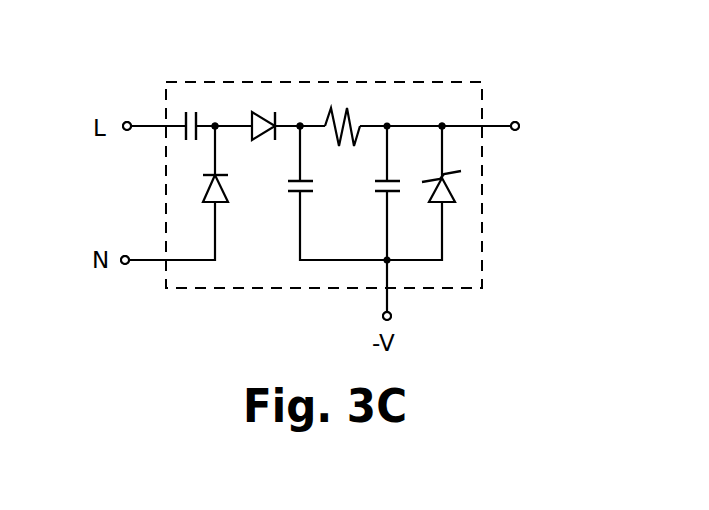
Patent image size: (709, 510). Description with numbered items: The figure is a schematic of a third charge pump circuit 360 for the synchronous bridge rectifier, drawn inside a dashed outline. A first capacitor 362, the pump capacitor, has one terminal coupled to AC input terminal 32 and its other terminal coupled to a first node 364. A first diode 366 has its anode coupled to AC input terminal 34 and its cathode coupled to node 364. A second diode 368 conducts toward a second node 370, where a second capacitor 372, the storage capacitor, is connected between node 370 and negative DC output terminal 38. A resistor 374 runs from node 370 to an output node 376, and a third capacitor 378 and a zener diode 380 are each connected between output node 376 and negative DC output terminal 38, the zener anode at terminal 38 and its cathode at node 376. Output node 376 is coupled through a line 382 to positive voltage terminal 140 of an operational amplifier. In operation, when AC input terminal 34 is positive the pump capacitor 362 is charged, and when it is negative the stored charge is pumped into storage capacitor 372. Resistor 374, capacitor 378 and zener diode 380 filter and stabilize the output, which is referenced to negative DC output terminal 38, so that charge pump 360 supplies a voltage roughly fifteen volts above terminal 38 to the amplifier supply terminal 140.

The AC input terminal 32 is at (127, 121).
The AC input terminal 34 is at (125, 264).
The negative DC output terminal 38 is at (391, 315).
The positive voltage terminal 140 is at (517, 122).
The charge pump circuit 360 is at (453, 78).
The first capacitor 362 is at (188, 106).
The first node 364 is at (214, 119).
The first diode 366 is at (222, 200).
The second diode 368 is at (258, 139).
The second node 370 is at (300, 118).
The second capacitor 372 is at (304, 193).
The resistor 374 is at (349, 117).
The output node 376 is at (418, 126).
The third capacitor 378 is at (391, 193).
The zener diode 380 is at (452, 202).
The line 382 is at (467, 128).